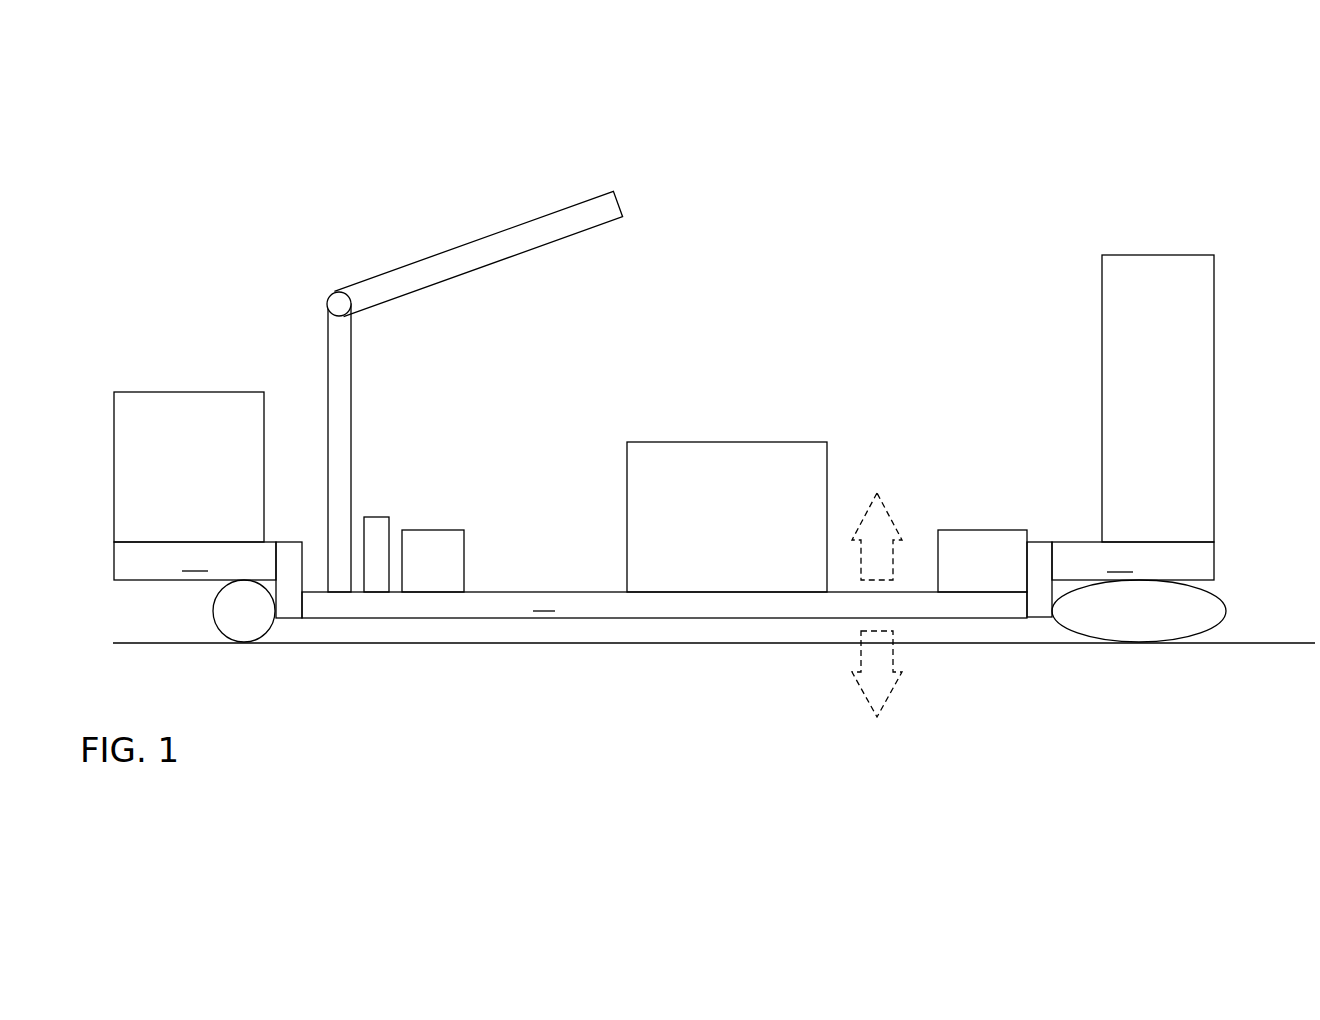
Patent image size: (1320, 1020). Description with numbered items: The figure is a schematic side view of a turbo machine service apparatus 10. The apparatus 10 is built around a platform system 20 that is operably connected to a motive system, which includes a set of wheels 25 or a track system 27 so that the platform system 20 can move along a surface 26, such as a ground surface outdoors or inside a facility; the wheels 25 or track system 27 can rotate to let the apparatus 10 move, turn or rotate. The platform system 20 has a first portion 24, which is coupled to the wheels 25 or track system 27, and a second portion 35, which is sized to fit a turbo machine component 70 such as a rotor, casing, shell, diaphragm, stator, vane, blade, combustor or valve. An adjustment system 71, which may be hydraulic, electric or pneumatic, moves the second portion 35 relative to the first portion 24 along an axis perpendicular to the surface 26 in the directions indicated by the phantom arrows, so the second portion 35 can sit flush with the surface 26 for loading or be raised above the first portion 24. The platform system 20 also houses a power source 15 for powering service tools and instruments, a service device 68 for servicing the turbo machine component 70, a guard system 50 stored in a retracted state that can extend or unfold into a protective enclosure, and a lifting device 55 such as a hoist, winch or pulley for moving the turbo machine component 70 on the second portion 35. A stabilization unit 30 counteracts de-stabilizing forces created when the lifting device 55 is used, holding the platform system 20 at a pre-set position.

The apparatus 10 is at (245, 185).
The power source 15 is at (164, 507).
The platform system 20 is at (664, 580).
The first portion 24 is at (195, 580).
The set of wheels 25 is at (244, 611).
The surface 26 is at (673, 643).
The track system 27 is at (1139, 611).
The stabilization unit 30 is at (377, 517).
The second portion 35 is at (587, 592).
The guard system 50 is at (1139, 368).
The lifting device 55 is at (473, 243).
The service device 68 is at (419, 567).
The turbo machine component 70 is at (670, 567).
The adjustment system 71 is at (954, 569).